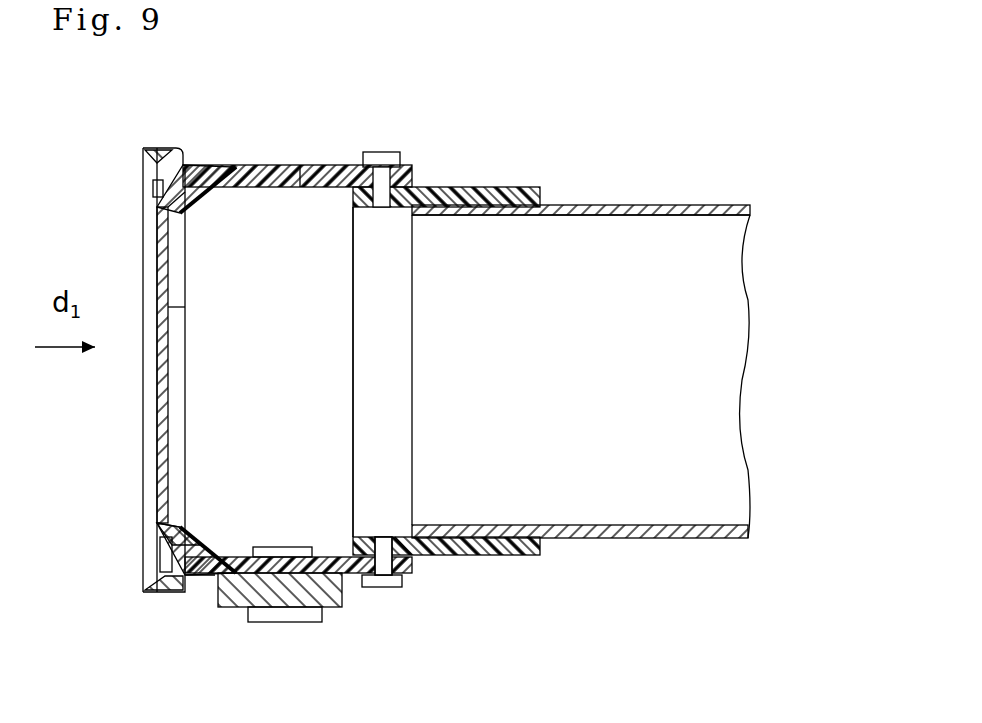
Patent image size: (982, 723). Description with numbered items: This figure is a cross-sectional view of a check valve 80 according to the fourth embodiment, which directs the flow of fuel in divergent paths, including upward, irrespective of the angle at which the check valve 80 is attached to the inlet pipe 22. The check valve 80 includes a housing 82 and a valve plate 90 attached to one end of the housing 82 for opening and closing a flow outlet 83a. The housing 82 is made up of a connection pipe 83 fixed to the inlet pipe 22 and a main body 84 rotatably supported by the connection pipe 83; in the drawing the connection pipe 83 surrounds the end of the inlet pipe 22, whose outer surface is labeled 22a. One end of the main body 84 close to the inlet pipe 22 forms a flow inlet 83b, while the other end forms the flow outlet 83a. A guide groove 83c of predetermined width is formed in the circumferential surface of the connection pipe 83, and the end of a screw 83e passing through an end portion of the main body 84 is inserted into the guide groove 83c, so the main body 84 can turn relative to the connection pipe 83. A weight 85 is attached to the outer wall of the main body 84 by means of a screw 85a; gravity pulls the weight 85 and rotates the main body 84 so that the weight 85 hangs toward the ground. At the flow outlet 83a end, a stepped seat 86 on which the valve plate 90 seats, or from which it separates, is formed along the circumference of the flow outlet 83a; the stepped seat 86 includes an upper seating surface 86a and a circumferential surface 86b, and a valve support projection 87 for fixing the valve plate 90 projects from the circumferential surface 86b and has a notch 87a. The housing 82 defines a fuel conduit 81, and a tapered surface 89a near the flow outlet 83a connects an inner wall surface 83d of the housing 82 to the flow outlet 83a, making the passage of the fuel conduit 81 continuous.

The check valve 80 is at (580, 96).
The fuel conduit 81 is at (258, 212).
The housing 82 is at (456, 94).
The connection pipe 83 is at (440, 190).
The flow outlet 83a is at (180, 373).
The flow inlet 83b is at (392, 325).
The guide groove 83c is at (402, 567).
The inner wall surface 83d is at (287, 187).
The screw 83e is at (385, 590).
The main body 84 is at (318, 172).
The weight 85 is at (222, 598).
The screw 85a is at (270, 622).
The stepped seat 86 is at (160, 553).
The upper seating surface 86a is at (175, 530).
The circumferential surface 86b is at (160, 585).
The valve support projection 87 is at (153, 188).
The notch 87a is at (152, 150).
The tapered surface 89a is at (200, 195).
The valve plate 90 is at (155, 406).
The inlet pipe 22 is at (636, 205).
The tube outer surface 22a is at (726, 217).